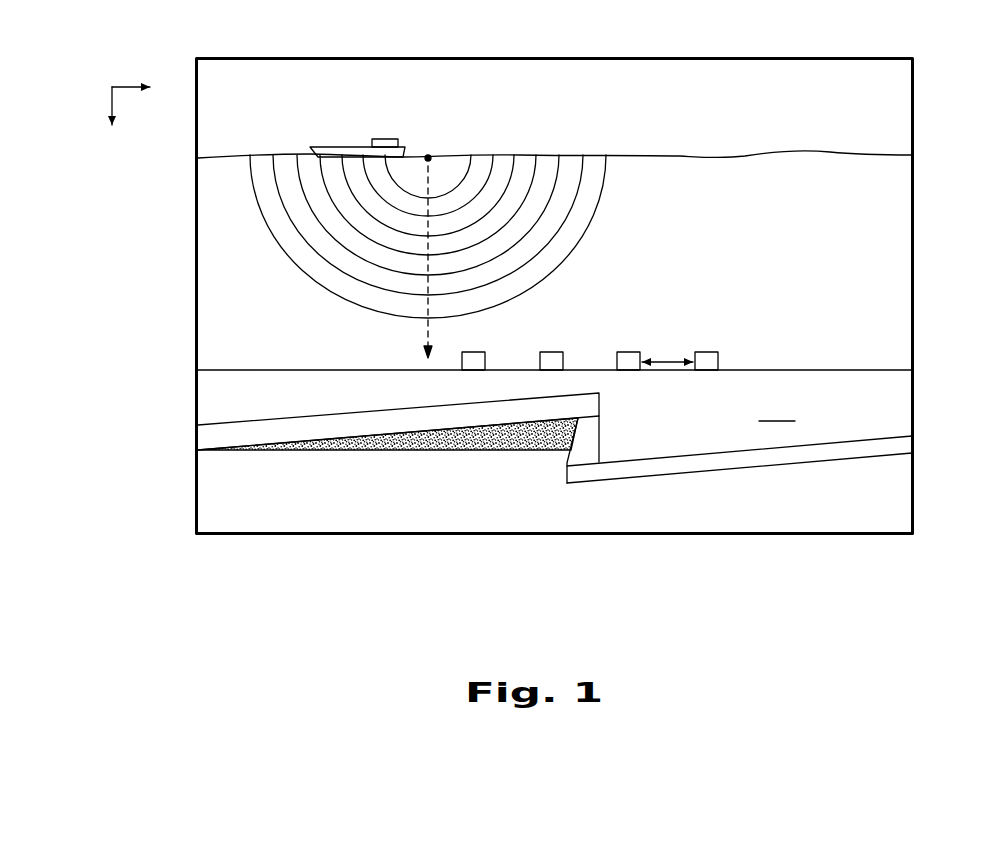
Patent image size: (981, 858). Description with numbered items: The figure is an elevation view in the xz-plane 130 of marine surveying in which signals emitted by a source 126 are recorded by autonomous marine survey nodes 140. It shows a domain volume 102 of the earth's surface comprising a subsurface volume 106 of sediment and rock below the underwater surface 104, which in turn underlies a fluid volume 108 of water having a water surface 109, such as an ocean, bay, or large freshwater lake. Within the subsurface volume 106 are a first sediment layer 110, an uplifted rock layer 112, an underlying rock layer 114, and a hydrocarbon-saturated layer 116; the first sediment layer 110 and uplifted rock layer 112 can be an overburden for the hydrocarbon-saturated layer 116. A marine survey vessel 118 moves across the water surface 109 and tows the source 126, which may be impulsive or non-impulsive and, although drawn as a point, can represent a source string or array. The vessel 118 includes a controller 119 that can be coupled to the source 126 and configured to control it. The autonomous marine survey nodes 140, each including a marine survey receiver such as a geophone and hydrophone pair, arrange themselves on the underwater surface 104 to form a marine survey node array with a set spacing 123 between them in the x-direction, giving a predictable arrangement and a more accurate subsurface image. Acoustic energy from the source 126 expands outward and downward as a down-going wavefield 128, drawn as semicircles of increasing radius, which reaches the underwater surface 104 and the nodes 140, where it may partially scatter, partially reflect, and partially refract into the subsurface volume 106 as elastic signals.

The domain volume 102 is at (138, 203).
The underwater surface 104 is at (248, 370).
The subsurface volume 106 is at (218, 393).
The fluid volume 108 is at (218, 290).
The water surface 109 is at (677, 155).
The first sediment layer 110 is at (681, 438).
The uplifted rock layer 112 is at (213, 440).
The underlying rock layer 114 is at (307, 525).
The hydrocarbon-saturated layer 116 is at (397, 450).
The marine survey vessel 118 is at (350, 147).
The controller 119 is at (388, 139).
The spacing 123 is at (668, 360).
The source 126 is at (428, 154).
The down-going wavefield 128 is at (573, 250).
The xz-plane 130 is at (112, 87).
The autonomous marine survey nodes 140 is at (470, 352).